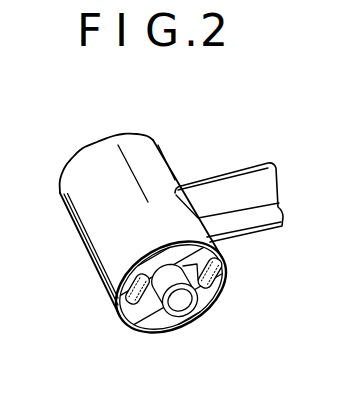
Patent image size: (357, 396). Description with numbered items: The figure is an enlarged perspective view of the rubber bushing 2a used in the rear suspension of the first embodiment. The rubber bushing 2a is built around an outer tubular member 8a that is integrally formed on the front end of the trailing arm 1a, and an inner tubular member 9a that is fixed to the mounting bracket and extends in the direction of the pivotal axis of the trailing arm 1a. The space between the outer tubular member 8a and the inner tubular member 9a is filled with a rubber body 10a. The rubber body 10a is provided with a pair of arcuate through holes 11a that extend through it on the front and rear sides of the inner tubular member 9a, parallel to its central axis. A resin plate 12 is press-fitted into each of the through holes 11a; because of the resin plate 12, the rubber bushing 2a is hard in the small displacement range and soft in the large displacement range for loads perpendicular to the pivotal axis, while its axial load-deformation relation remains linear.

The trailing arm 1a is at (232, 168).
The rubber bushing 2a is at (229, 302).
The outer tubular member 8a is at (102, 230).
The inner tubular member 9a is at (180, 330).
The rubber body 10a is at (128, 327).
The arcuate through holes 11a is at (224, 270).
The resin plate 12 is at (223, 249).